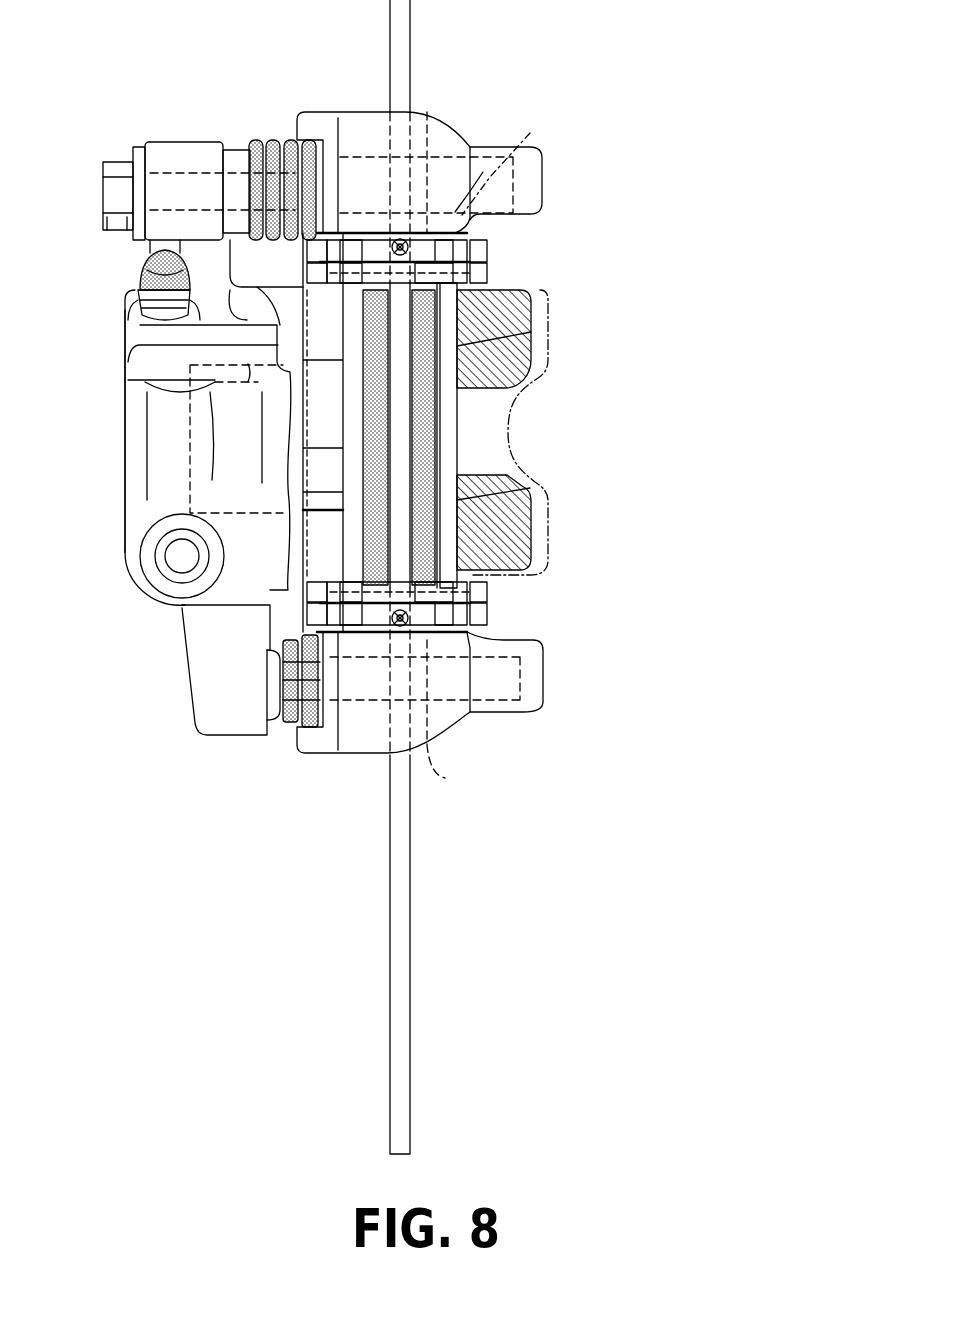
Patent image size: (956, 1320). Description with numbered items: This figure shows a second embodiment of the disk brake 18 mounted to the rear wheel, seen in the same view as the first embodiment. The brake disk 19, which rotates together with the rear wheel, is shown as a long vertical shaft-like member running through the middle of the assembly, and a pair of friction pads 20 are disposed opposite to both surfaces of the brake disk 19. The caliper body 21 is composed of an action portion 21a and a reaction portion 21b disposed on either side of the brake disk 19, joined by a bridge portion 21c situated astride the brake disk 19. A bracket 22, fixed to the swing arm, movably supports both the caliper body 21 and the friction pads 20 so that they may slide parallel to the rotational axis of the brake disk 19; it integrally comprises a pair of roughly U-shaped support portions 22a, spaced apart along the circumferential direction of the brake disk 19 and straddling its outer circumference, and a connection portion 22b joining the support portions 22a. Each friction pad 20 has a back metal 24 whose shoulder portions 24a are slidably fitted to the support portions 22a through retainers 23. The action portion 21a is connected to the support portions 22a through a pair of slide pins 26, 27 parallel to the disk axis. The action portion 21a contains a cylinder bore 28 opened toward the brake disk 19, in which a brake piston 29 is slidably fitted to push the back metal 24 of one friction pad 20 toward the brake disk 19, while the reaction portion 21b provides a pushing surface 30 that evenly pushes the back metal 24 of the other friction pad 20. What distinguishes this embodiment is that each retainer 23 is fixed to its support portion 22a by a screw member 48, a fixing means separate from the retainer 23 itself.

The disk brake 18 is at (387, 940).
The brake disk 19 is at (405, 950).
The friction pad 20 is at (423, 345).
The caliper body 21 is at (233, 738).
The action portion 21a is at (125, 460).
The reaction portion 21b is at (510, 432).
The bridge portion 21c is at (508, 162).
The bracket 22 is at (477, 718).
The support portion 22a is at (357, 112).
The connection portion 22b is at (277, 327).
The retainer 23 is at (487, 270).
The back metal 24 is at (453, 440).
The shoulder portion 24a is at (352, 250).
The slide pin 26 is at (452, 718).
The slide pin 27 is at (427, 115).
The cylinder bore 28 is at (195, 398).
The brake piston 29 is at (297, 480).
The pushing surface 30 is at (527, 490).
The screw member 48 is at (400, 239).